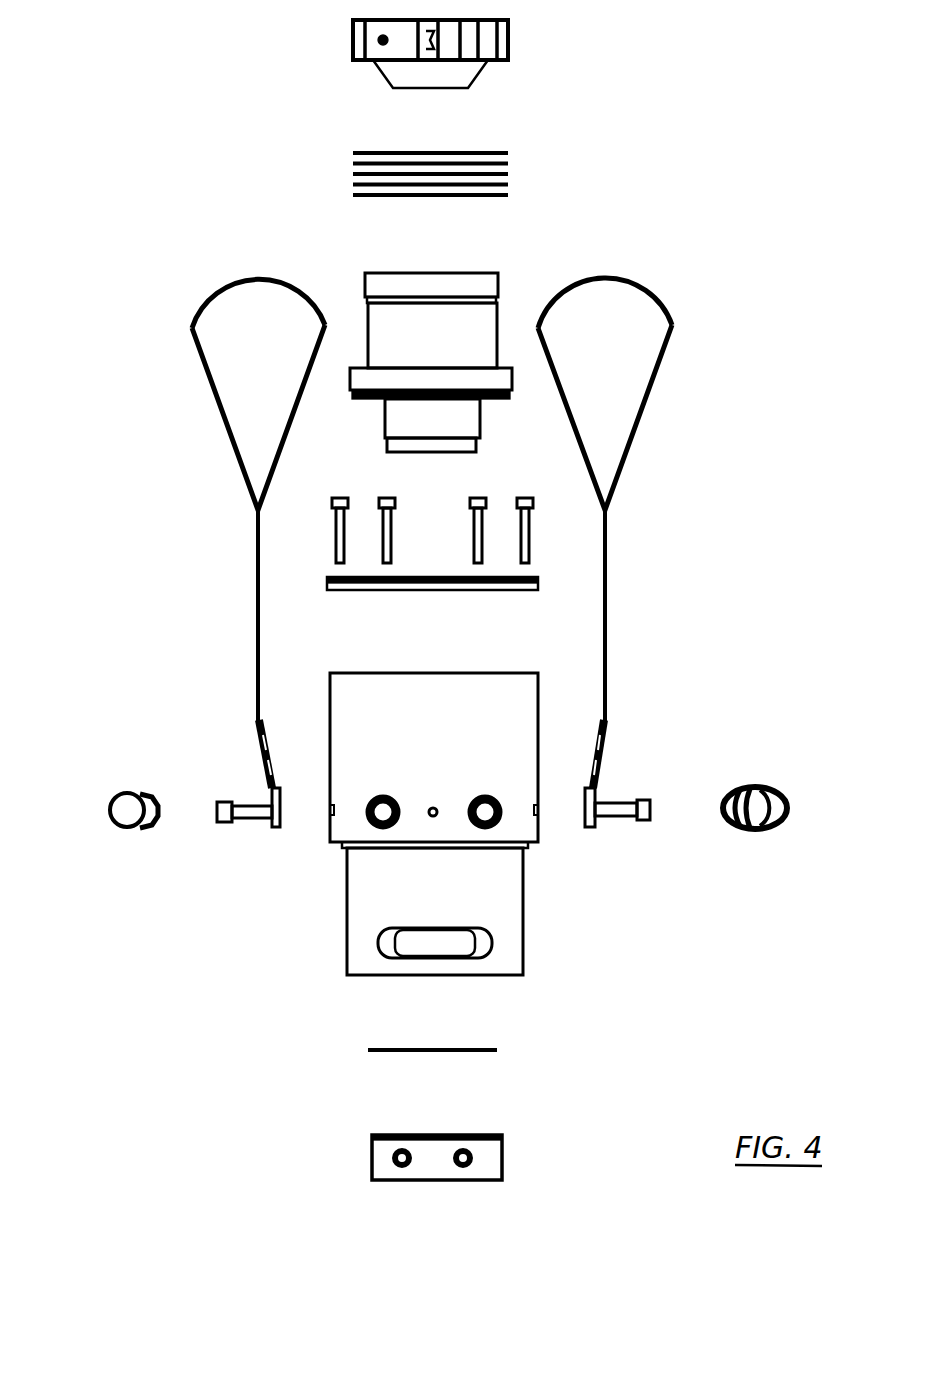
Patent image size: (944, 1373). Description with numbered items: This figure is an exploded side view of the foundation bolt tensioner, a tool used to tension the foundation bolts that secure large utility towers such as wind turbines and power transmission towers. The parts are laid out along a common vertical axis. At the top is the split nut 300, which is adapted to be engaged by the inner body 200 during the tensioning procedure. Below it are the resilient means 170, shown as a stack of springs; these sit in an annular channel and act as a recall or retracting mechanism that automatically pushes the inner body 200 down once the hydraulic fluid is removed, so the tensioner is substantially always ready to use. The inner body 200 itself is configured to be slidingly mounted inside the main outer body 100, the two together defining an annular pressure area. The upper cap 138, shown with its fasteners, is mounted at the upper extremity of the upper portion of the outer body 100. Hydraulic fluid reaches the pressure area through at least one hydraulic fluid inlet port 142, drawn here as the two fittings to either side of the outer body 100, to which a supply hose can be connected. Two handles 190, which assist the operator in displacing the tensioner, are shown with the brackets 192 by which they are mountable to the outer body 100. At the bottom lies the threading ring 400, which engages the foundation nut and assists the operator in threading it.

The main outer body 100 is at (505, 890).
The upper cap 138 is at (495, 583).
The hydraulic fluid inlet port 142 is at (125, 830).
The resilient means 170 is at (517, 150).
The handles 190 is at (228, 436).
The brackets 192 is at (270, 795).
The inner body 200 is at (496, 273).
The split nut 300 is at (520, 45).
The threading ring 400 is at (505, 1172).